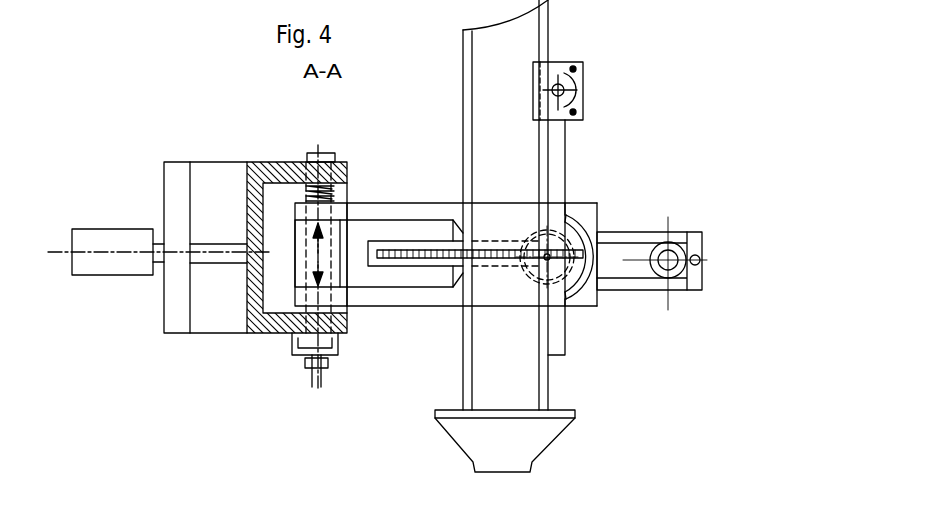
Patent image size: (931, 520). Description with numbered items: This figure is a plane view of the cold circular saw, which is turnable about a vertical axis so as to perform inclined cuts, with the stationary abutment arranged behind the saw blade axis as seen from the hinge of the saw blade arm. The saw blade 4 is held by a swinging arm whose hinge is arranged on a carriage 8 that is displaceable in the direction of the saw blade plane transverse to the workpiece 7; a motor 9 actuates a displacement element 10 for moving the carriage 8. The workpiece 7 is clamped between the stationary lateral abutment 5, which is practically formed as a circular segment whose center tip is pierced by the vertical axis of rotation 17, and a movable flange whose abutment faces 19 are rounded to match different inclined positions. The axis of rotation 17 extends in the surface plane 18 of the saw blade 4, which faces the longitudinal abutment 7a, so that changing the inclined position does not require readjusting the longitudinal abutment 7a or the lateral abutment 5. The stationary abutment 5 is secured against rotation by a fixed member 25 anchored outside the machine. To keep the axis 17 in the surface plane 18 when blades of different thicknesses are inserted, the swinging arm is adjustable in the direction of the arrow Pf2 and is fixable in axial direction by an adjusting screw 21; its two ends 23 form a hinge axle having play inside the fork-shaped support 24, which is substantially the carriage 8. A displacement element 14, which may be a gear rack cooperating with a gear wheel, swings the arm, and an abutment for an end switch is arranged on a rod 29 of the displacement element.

The saw blade 4 is at (494, 262).
The lateral abutment 5 is at (573, 233).
The workpiece 7 is at (511, 67).
The longitudinal abutment 7a is at (555, 433).
The carriage 8 is at (256, 344).
The motor 9 is at (105, 237).
The displacement element 10 is at (206, 246).
The displacement element 14 is at (677, 233).
The axis of rotation 17 is at (550, 260).
The surface plane 18 is at (508, 258).
The abutment faces 19 is at (469, 235).
The adjusting screw 21 is at (314, 393).
The ends 23 is at (333, 160).
The fork-shaped support 24 is at (281, 166).
The fixed member 25 is at (578, 100).
The rod 29 is at (700, 267).
The arrow Pf2 is at (319, 250).